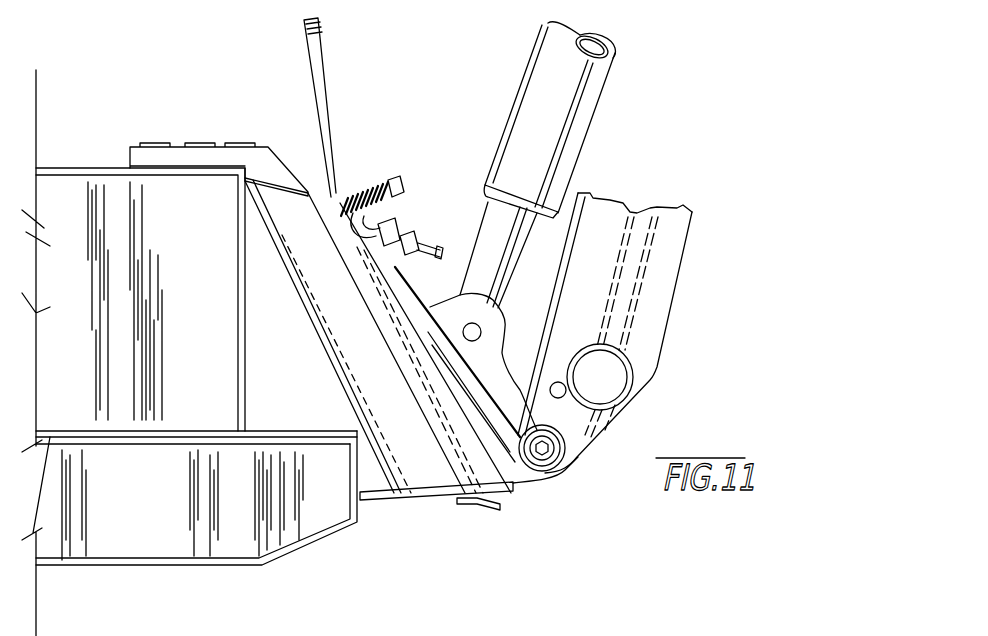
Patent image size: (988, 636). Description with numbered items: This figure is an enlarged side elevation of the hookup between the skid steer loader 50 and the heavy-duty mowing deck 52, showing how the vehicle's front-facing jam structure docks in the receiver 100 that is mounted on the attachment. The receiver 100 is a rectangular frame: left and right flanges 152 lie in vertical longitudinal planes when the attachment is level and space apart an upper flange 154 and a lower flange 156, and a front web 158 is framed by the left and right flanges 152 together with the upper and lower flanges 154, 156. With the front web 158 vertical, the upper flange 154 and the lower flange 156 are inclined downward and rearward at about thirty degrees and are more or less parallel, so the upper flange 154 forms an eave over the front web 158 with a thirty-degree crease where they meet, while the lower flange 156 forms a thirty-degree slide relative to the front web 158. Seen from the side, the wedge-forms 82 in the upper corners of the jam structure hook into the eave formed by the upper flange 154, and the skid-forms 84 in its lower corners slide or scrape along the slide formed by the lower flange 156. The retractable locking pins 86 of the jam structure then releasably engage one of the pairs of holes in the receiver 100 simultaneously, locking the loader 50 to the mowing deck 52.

The skid steer loader 50 is at (620, 220).
The heavy-duty mowing deck 52 is at (130, 537).
The wedge-forms 82 is at (333, 187).
The skid-forms 84 is at (502, 480).
The retractable locking pins 86 is at (462, 502).
The receiver 100 is at (363, 300).
The left and right flanges 152 is at (420, 443).
The upper flange 154 is at (320, 195).
The lower flange 156 is at (390, 500).
The front web 158 is at (280, 247).